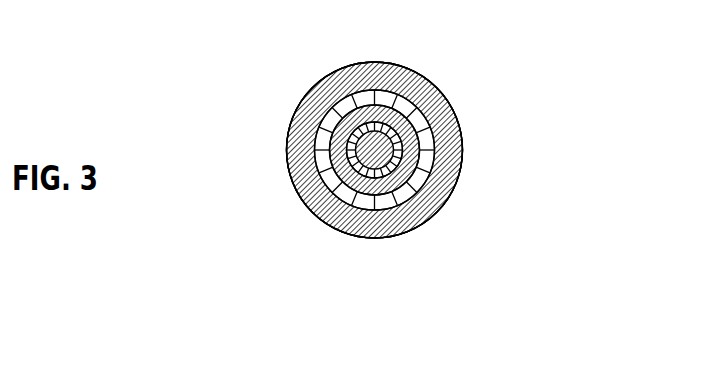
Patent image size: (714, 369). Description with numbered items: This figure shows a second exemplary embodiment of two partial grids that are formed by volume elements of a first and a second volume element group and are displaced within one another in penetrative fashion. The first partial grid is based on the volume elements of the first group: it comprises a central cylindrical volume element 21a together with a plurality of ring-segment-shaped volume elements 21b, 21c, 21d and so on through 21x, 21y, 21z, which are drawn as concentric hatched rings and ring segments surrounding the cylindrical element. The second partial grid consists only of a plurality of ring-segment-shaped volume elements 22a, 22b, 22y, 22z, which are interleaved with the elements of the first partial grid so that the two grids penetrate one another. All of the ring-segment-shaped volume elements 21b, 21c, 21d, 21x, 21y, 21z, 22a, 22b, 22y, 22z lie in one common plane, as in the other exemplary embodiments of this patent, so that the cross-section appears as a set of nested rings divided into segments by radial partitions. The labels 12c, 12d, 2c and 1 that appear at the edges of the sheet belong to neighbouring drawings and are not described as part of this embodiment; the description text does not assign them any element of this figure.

The cylindrical volume element 21a is at (442, 97).
The ring-segment-shaped volume element 21b is at (427, 220).
The ring-segment-shaped volume element 21c is at (443, 192).
The ring-segment-shaped volume element 21d is at (460, 153).
The ring-segment-shaped volume element 21x is at (348, 237).
The ring-segment-shaped volume element 21y is at (378, 237).
The ring-segment-shaped volume element 21z is at (410, 235).
The ring-segment-shaped volume element 22a is at (340, 75).
The ring-segment-shaped volume element 22b is at (302, 117).
The ring-segment-shaped volume element 22y is at (295, 193).
The ring-segment-shaped volume element 22z is at (330, 228).
The adjacent figure element 12c is at (86, 17).
The adjacent figure element 12d is at (150, 17).
The adjacent figure element 2c is at (126, 358).
The adjacent figure element 1 is at (167, 363).